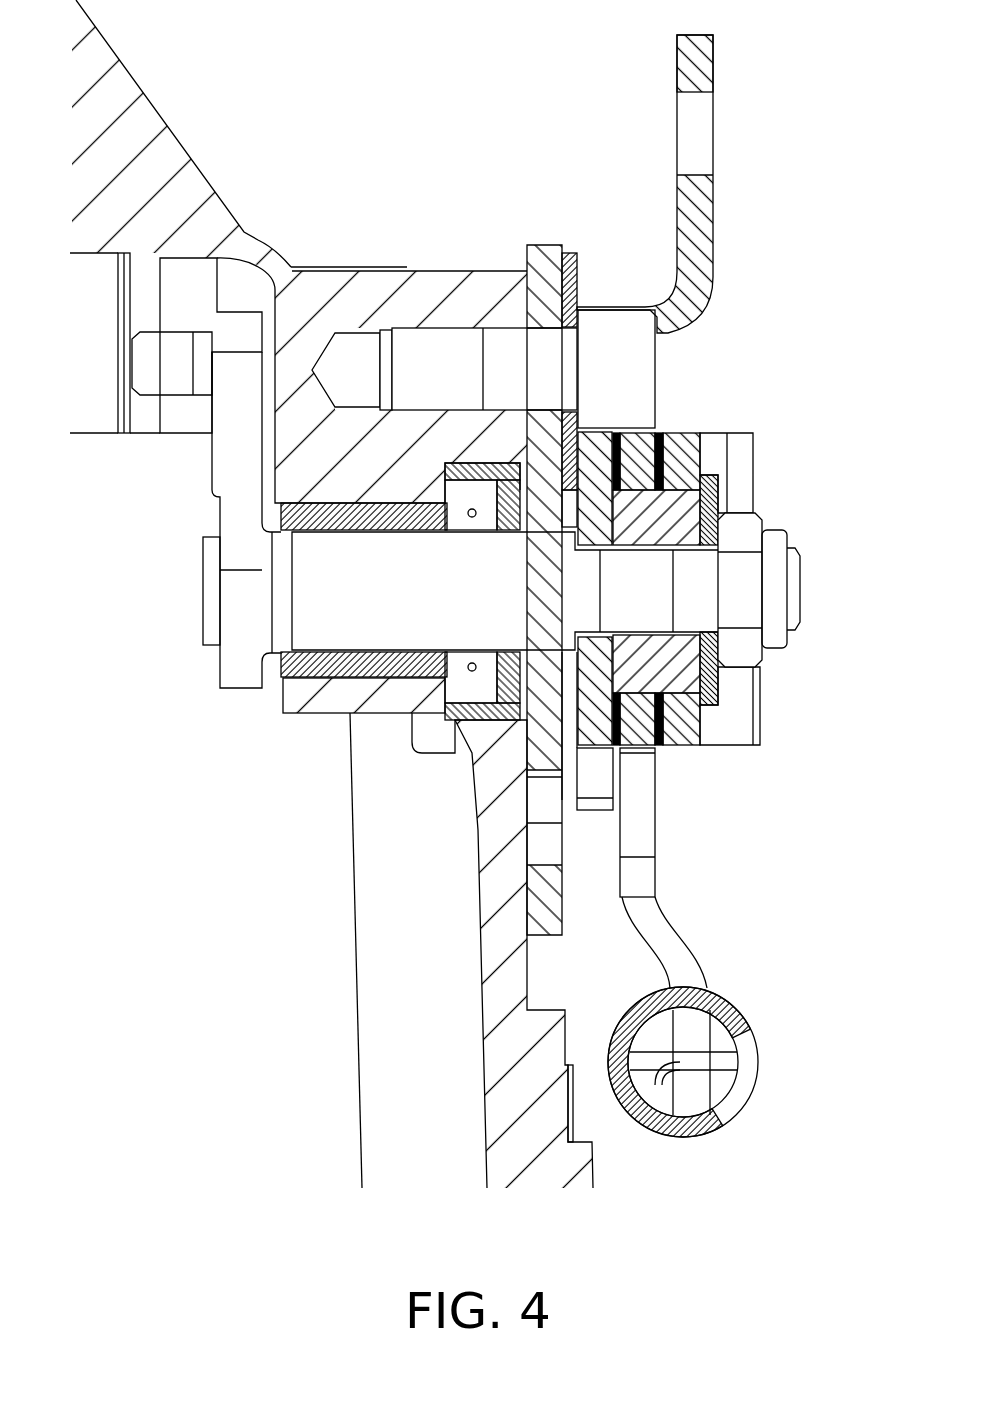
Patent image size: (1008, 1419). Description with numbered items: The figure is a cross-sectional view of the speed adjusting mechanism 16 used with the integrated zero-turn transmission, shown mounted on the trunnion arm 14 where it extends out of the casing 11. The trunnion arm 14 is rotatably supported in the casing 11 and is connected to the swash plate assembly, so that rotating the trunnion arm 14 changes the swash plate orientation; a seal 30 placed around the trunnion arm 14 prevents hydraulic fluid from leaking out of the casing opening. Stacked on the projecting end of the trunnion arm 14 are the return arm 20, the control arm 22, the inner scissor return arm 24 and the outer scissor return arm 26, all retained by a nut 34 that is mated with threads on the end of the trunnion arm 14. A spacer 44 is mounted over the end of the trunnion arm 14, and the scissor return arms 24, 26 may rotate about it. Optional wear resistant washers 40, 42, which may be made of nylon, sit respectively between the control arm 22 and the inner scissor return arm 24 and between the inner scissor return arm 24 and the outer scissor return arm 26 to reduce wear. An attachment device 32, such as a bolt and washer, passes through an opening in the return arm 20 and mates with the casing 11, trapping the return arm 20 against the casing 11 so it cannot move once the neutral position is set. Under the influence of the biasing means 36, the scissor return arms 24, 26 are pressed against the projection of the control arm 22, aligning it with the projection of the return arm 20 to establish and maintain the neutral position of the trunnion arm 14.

The casing 11 is at (432, 270).
The trunnion arm 14 is at (483, 605).
The speed adjusting mechanism 16 is at (752, 823).
The return arm 20 is at (546, 245).
The control arm 22 is at (713, 215).
The inner scissor return arm 24 is at (643, 432).
The outer scissor return arm 26 is at (757, 433).
The seal 30 is at (470, 735).
The attachment device 32 is at (658, 340).
The nut 34 is at (753, 585).
The biasing means 36 is at (747, 1047).
The wear resistant washer 40 is at (618, 432).
The wear resistant washer 42 is at (683, 433).
The spacer 44 is at (685, 670).